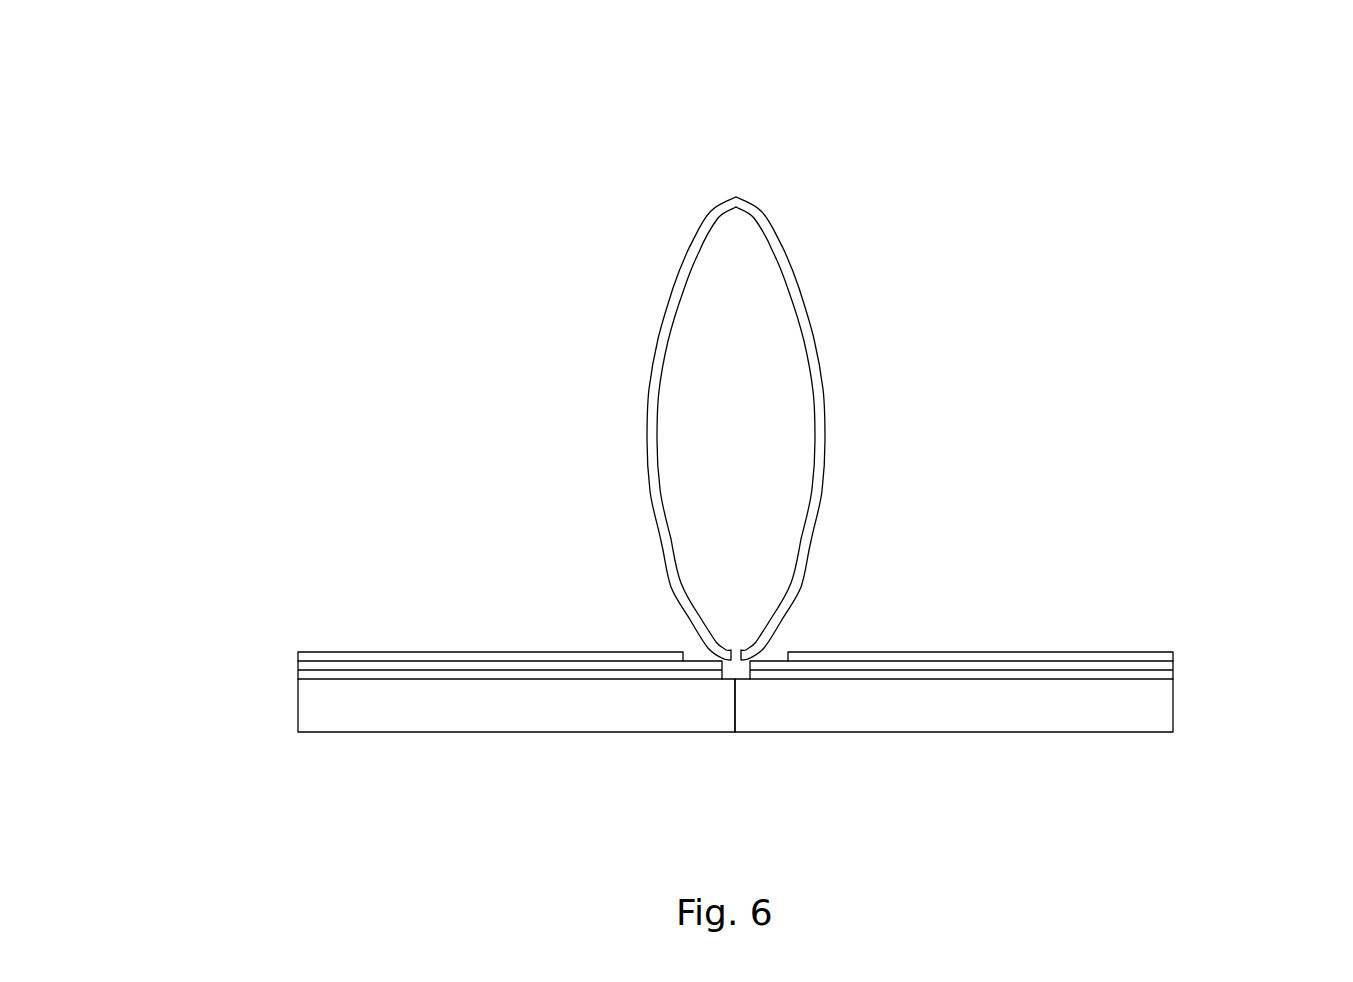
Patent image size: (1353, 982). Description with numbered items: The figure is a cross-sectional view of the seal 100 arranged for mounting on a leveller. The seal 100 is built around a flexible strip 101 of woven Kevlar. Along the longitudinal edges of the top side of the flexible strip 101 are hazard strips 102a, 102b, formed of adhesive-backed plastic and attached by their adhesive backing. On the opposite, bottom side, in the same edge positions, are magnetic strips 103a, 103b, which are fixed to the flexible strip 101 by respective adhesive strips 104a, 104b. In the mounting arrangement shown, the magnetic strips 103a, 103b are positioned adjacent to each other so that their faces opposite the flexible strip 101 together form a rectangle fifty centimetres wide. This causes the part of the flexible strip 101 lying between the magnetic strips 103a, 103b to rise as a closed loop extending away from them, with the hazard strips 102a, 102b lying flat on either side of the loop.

The seal 100 is at (905, 149).
The flexible strip 101 is at (800, 293).
The hazard strip 102a is at (1133, 655).
The hazard strip 102b is at (330, 653).
The magnetic strip 103a is at (1145, 723).
The magnetic strip 103b is at (325, 722).
The adhesive strip 104a is at (1168, 672).
The adhesive strip 104b is at (312, 672).